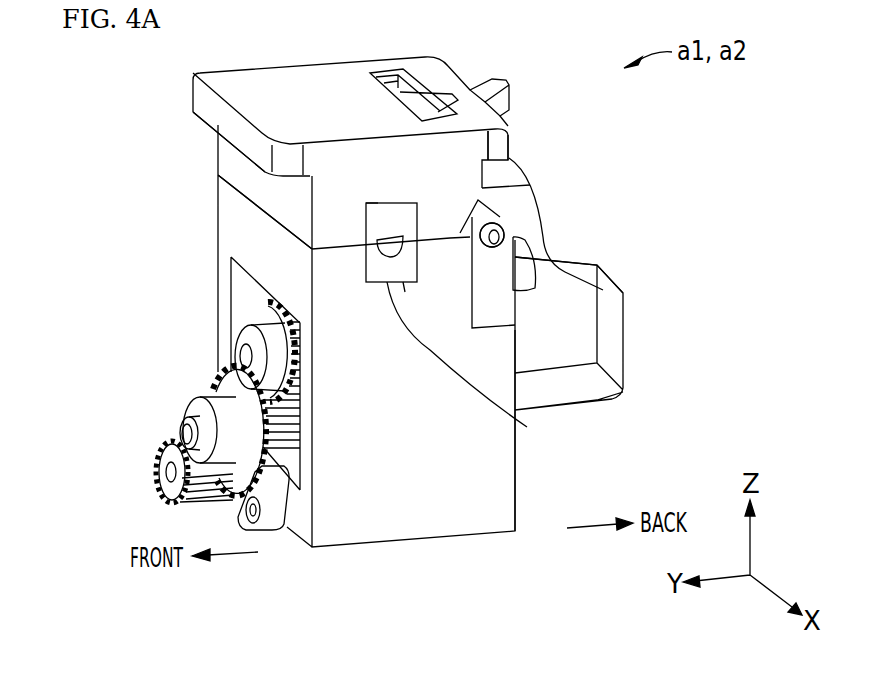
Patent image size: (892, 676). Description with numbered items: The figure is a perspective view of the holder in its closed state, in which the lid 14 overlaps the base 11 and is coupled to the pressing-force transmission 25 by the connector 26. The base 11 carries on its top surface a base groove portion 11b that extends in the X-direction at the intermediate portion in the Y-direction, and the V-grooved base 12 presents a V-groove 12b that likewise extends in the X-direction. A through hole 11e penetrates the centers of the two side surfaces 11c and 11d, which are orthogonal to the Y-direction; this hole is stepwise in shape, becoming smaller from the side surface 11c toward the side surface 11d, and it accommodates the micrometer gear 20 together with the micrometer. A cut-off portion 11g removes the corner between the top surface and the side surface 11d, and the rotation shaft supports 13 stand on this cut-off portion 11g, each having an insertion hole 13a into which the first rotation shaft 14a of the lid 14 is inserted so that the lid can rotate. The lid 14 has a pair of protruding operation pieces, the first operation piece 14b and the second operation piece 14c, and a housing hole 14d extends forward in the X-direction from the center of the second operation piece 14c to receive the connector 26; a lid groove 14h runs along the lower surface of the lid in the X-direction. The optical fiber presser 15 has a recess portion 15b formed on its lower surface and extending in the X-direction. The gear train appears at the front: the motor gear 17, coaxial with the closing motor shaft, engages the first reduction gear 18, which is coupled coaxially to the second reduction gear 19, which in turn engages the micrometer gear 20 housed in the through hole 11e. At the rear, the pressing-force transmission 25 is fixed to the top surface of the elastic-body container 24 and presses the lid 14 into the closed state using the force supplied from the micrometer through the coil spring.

The base 11 is at (217, 213).
The base groove portion 11b is at (403, 282).
The side surface 11c is at (227, 202).
The side surface 11d is at (515, 472).
The through hole 11e is at (227, 291).
The cut-off portion 11g is at (612, 316).
The V-grooved base 12 is at (473, 362).
The V-groove 12b is at (503, 183).
The rotation shaft supports 13 is at (462, 300).
The insertion hole 13a is at (505, 231).
The lid 14 is at (340, 62).
The first rotation shaft 14a is at (503, 229).
The first operation piece 14b is at (203, 122).
The second operation piece 14c is at (507, 140).
The housing hole 14d is at (410, 72).
The lid groove 14h is at (377, 203).
The optical fiber presser 15 is at (392, 203).
The recess portion 15b is at (490, 190).
The motor gear 17 is at (182, 505).
The first reduction gear 18 is at (213, 370).
The second reduction gear 19 is at (280, 447).
The micrometer gear 20 is at (267, 302).
The elastic-body container 24 is at (627, 343).
The pressing-force transmission 25 is at (510, 177).
The connector 26 is at (512, 92).